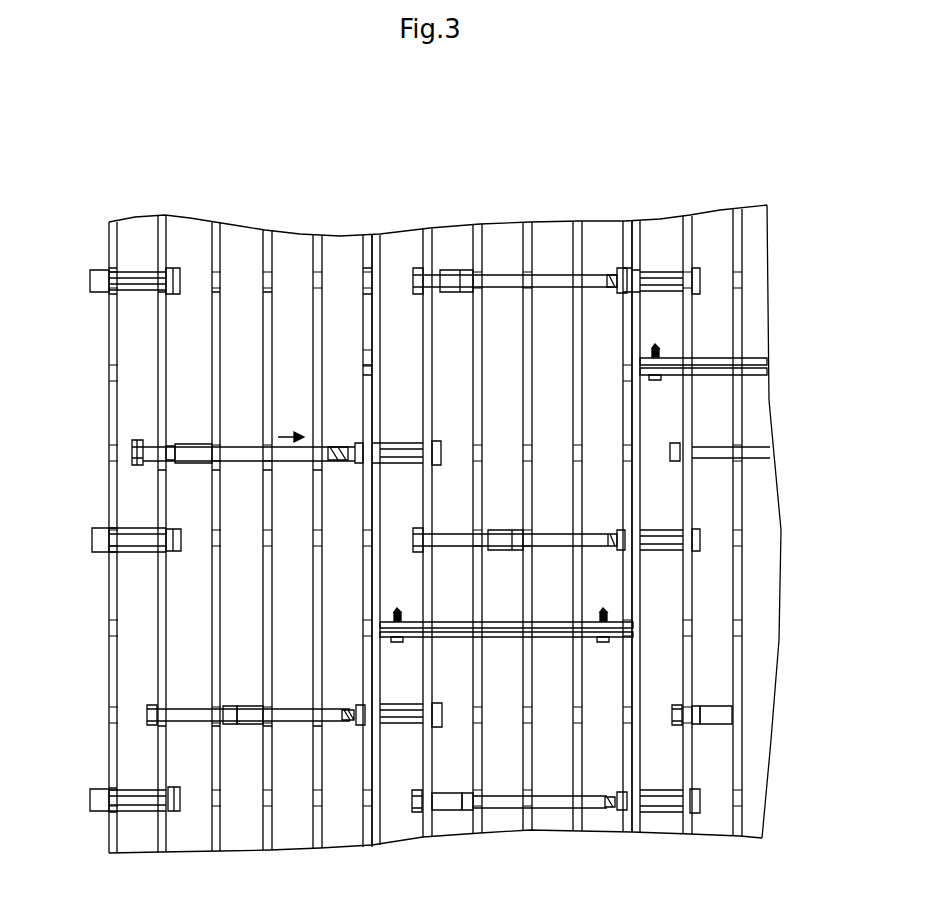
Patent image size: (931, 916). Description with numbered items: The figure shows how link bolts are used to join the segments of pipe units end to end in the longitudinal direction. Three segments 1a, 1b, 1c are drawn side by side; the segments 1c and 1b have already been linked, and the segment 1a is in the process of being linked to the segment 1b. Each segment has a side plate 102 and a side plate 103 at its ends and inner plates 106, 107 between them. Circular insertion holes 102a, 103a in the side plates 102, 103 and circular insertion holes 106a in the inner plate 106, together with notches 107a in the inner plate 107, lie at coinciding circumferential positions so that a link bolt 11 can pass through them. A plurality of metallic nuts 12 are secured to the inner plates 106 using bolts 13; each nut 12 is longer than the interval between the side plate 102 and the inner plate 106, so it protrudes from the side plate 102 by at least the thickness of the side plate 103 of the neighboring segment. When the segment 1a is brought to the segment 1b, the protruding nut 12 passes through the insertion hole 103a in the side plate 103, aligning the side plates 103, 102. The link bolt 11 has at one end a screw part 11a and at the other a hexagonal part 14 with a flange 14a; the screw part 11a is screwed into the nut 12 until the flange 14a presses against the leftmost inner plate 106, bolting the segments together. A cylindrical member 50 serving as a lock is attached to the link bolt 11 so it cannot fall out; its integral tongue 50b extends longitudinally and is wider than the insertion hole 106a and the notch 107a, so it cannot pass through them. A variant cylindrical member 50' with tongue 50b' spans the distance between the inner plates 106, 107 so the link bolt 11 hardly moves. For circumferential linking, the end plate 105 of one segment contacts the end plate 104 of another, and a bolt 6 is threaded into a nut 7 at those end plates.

The segment 1a is at (247, 170).
The segment 1b is at (513, 182).
The segment 1c is at (717, 170).
The side plate 102 is at (111, 221).
The inner plate 106 is at (162, 216).
The inner plate 107 is at (216, 222).
The side plate 103 is at (367, 235).
The bolt 13 is at (173, 267).
The nut 12 is at (139, 293).
The link bolt 11 is at (232, 446).
The screw part 11a is at (340, 445).
The hexagonal part 14 is at (137, 439).
The flange 14a is at (133, 468).
The cylindrical member 50 is at (349, 477).
The tongue 50b is at (342, 508).
The cylindrical member 50' is at (585, 764).
The tongue 50b' is at (578, 758).
The end plate 105 is at (505, 621).
The end plate 104 is at (500, 638).
The nut 7 is at (397, 608).
The bolt 6 is at (397, 643).
The circular insertion hole 102a is at (105, 278).
The circular insertion hole 103a is at (362, 272).
The circular insertion hole 106a is at (166, 298).
The notch 107a is at (218, 293).